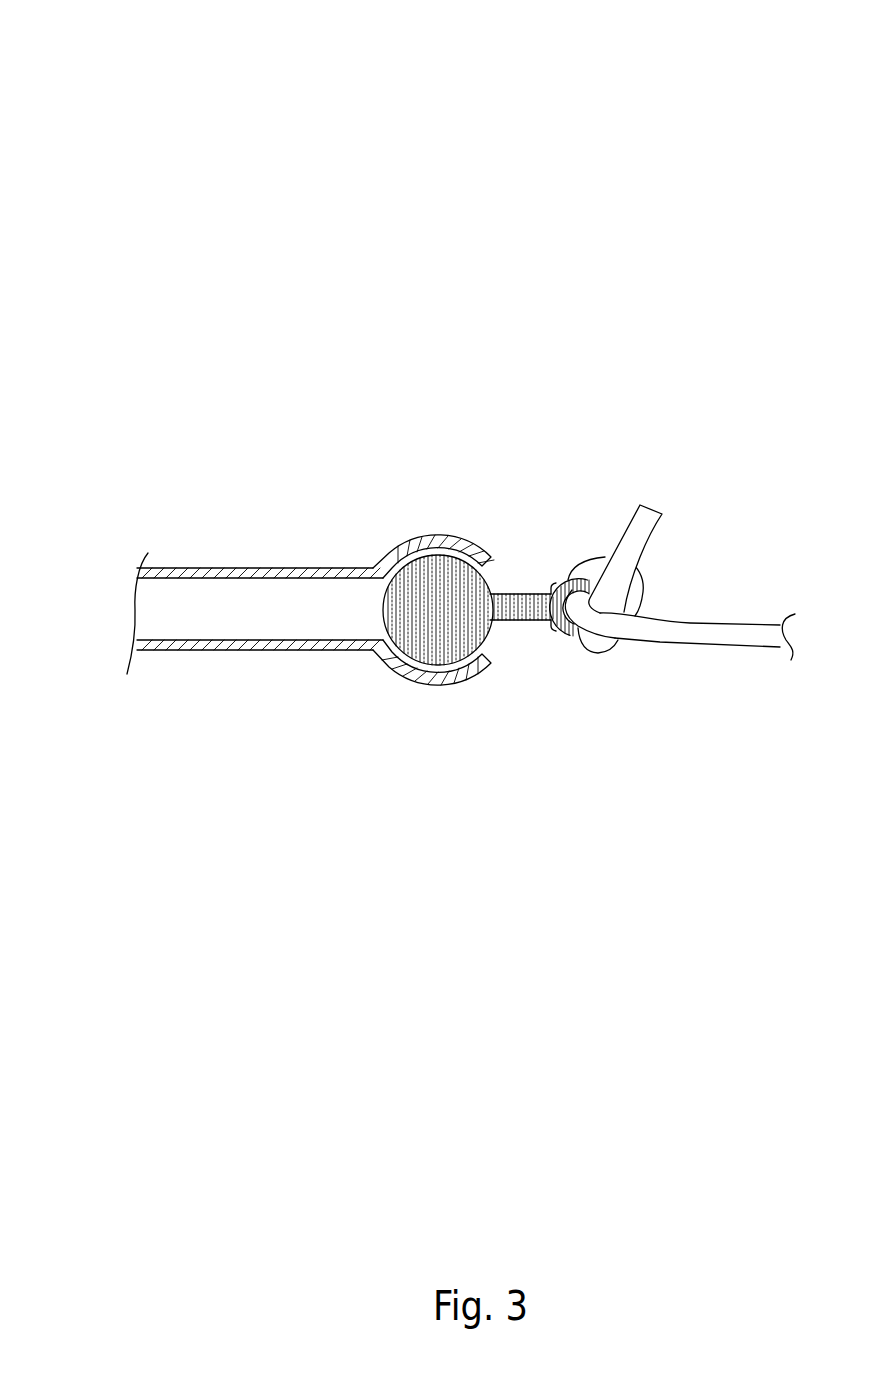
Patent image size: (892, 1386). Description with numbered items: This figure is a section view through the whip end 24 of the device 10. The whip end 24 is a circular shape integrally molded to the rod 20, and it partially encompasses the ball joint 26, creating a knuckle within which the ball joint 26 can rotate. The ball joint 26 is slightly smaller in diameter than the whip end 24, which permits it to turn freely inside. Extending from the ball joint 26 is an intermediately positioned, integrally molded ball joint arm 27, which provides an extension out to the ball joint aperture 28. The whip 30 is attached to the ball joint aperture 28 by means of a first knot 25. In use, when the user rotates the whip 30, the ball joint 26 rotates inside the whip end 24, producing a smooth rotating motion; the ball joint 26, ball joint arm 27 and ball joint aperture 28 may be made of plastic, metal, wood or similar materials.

The retention device assembly 10 is at (122, 117).
The rod 20 is at (212, 638).
The whip end 24 is at (444, 533).
The ball joint 26 is at (476, 592).
The ball joint arm 27 is at (522, 616).
The ball joint aperture 28 is at (583, 588).
The first knot 25 is at (627, 611).
The whip 30 is at (725, 638).